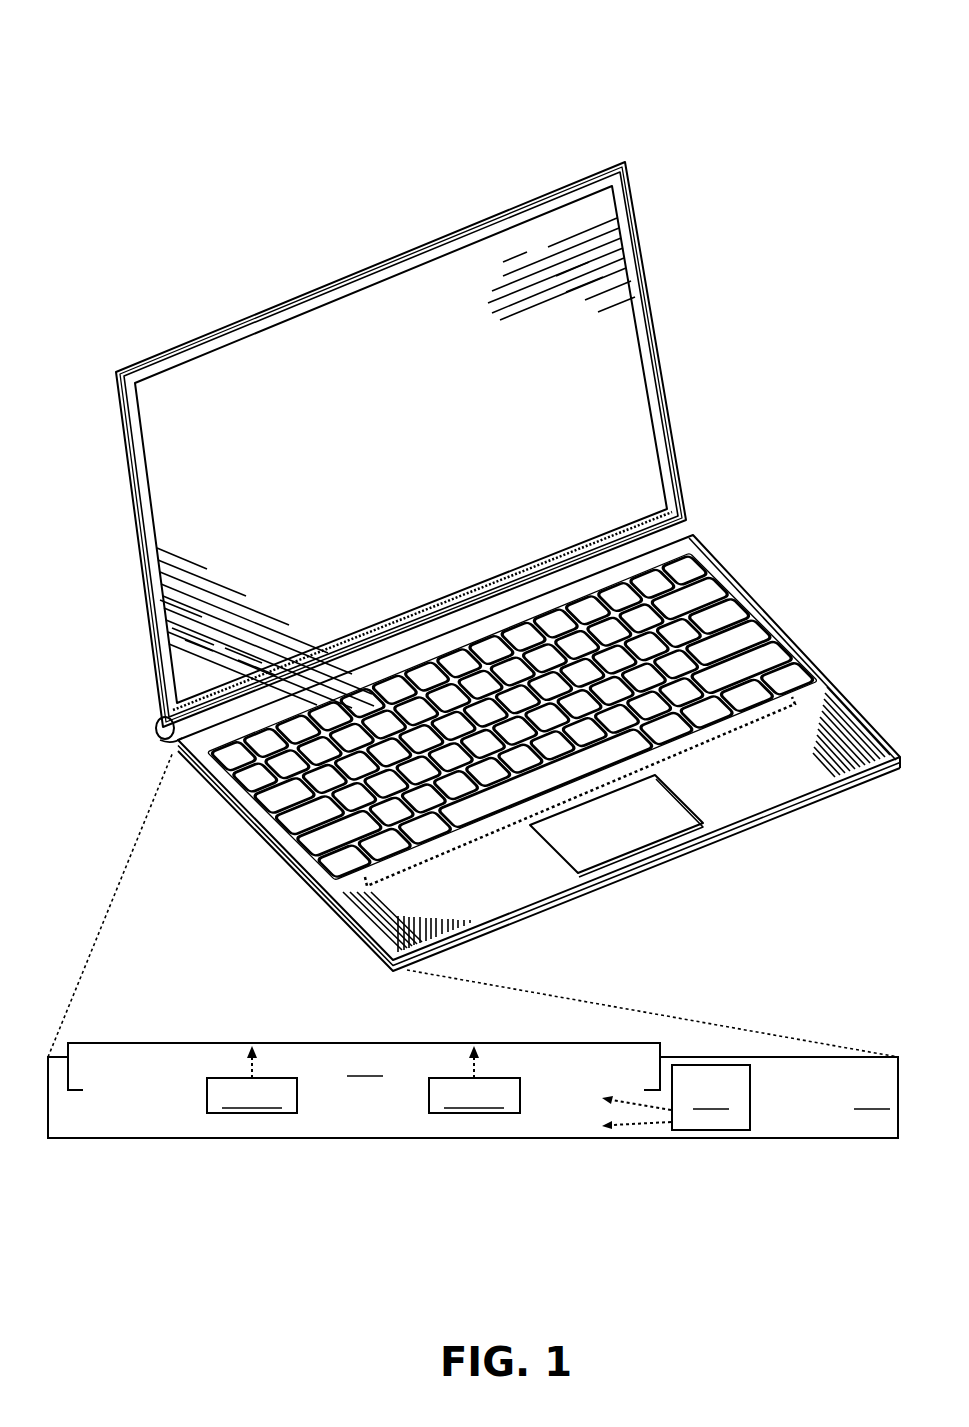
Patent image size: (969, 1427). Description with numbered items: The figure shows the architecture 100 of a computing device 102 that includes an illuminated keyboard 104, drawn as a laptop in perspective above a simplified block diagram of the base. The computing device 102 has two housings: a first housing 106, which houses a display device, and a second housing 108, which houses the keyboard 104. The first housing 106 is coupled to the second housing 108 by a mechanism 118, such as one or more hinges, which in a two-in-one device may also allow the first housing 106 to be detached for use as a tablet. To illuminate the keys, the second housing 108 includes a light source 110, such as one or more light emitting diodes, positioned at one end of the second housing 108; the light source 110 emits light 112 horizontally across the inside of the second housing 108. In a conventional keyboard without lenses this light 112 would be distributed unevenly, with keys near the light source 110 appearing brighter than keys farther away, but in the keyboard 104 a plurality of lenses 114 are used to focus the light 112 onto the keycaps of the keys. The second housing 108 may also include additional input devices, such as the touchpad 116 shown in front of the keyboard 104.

The architecture 100 is at (140, 34).
The computing device 102 is at (775, 432).
The illuminated keyboard 104 is at (836, 676).
The first housing 106 is at (659, 350).
The second housing 108 is at (540, 915).
The light source 110 is at (713, 745).
The light 112 is at (552, 1122).
The lenses 114 is at (363, 1079).
The touchpad 116 is at (641, 845).
The hinges 118 is at (688, 520).